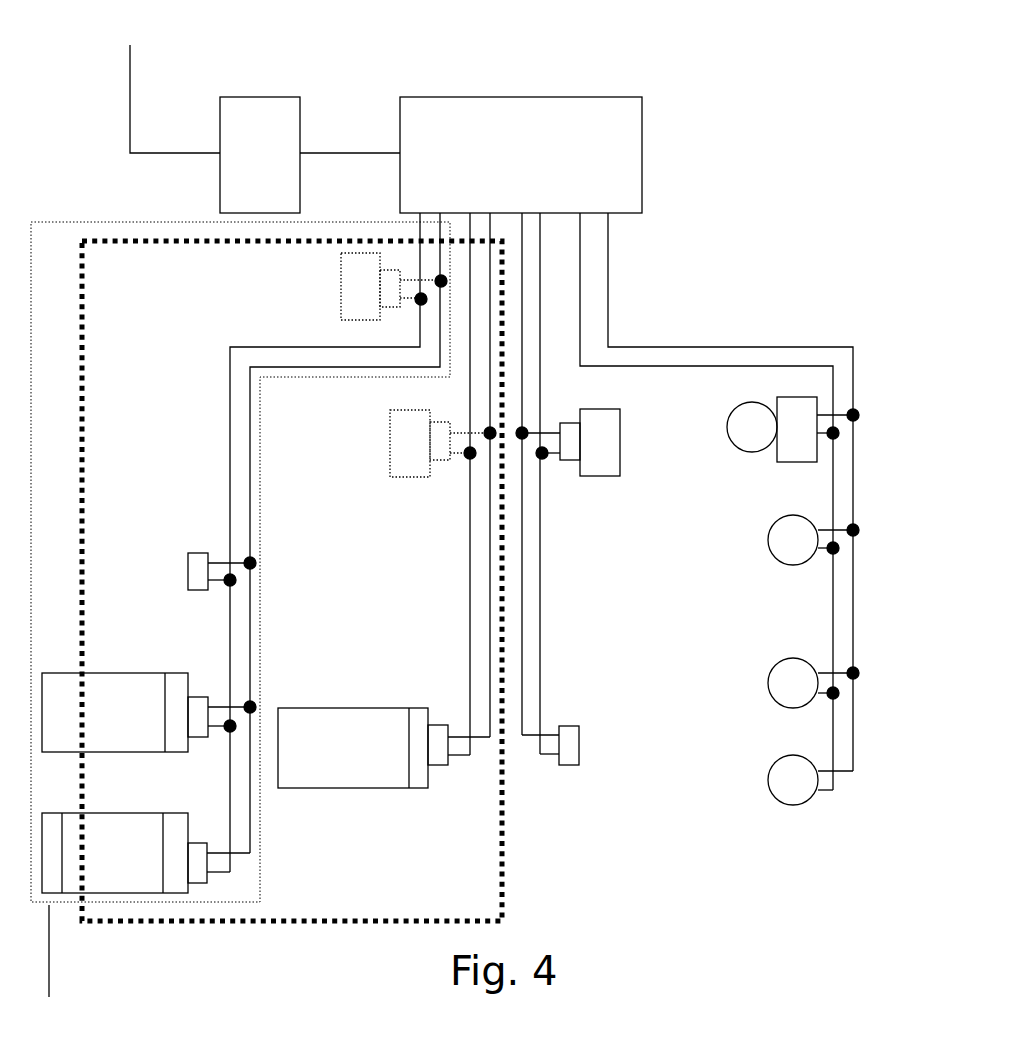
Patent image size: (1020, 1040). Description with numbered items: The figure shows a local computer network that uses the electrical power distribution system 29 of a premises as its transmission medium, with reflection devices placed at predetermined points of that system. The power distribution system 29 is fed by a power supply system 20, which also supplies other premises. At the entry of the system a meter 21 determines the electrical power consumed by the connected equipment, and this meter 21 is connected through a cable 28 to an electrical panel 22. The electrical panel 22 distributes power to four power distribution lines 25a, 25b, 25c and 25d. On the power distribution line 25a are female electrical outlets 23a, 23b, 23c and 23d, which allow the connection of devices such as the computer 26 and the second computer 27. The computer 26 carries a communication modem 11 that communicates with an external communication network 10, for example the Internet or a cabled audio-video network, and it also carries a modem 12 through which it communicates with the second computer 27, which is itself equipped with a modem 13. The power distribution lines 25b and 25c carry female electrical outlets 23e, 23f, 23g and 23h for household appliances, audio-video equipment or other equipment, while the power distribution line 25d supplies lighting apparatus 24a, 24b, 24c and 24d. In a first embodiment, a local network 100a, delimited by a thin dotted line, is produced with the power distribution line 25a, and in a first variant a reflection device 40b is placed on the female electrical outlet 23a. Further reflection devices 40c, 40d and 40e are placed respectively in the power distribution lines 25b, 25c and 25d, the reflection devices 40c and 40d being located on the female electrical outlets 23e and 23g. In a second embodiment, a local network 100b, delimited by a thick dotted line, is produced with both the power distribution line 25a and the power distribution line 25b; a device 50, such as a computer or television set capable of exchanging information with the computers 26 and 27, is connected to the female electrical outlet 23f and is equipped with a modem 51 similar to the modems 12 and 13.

The communication network 10 is at (72, 951).
The communication modem 11 is at (50, 893).
The modem 12 is at (168, 843).
The modem 13 is at (178, 690).
The power supply system 20 is at (130, 50).
The meter 21 is at (222, 108).
The electrical panel 22 is at (410, 112).
The female electrical outlet 23a is at (400, 280).
The female electrical outlet 23b is at (200, 583).
The female electrical outlet 23c is at (207, 737).
The female electrical outlet 23d is at (197, 875).
The female electrical outlet 23e is at (450, 425).
The female electrical outlet 23f is at (452, 757).
The female electrical outlet 23g is at (570, 457).
The female electrical outlet 23h is at (580, 753).
The lighting apparatus 24a is at (732, 425).
The lighting apparatus 24b is at (778, 543).
The lighting apparatus 24c is at (778, 678).
The lighting apparatus 24d is at (770, 773).
The power distribution line 25a is at (243, 367).
The power distribution line 25b is at (480, 570).
The power distribution line 25c is at (540, 600).
The power distribution line 25d is at (640, 362).
The computer 26 is at (87, 893).
The second computer 27 is at (62, 677).
The cable 28 is at (368, 152).
The power distribution system 29 is at (620, 73).
The reflection device 40b is at (342, 303).
The reflection device 40c is at (390, 470).
The reflection device 40d is at (610, 450).
The reflection device 40e is at (788, 445).
The device 50 is at (300, 715).
The modem 51 is at (420, 717).
The local network 100a is at (158, 232).
The local network 100b is at (508, 883).